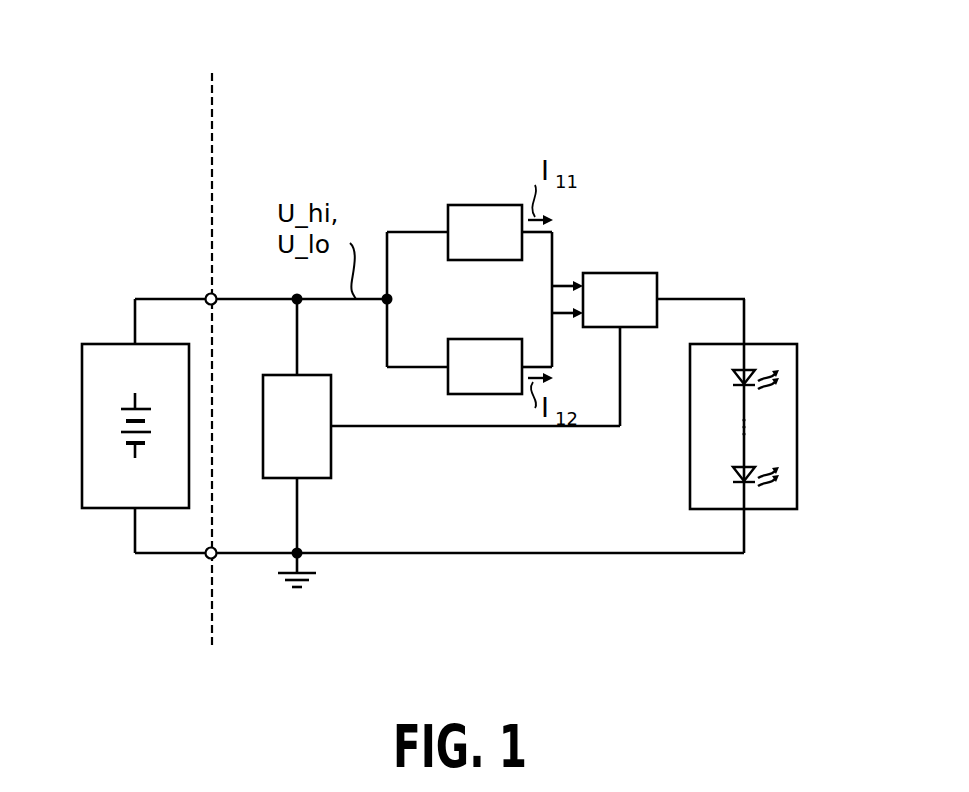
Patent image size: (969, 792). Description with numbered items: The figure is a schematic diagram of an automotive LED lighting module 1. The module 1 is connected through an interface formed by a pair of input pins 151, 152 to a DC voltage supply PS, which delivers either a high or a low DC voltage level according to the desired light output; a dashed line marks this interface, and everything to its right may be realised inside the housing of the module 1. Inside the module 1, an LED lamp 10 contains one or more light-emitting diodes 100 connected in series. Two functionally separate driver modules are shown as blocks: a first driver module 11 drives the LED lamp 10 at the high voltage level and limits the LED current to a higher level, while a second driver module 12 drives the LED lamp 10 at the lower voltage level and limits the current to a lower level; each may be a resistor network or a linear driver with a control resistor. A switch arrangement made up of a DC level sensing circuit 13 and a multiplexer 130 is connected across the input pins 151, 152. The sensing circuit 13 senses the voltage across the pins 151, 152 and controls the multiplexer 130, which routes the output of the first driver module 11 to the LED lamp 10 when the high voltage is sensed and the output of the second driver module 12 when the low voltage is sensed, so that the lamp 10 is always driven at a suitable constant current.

The automotive LED lighting module 1 is at (657, 142).
The LED lamp 10 is at (789, 334).
The light-emitting diode 100 is at (760, 387).
The first driver module 11 is at (485, 205).
The second driver module 12 is at (485, 339).
The DC level sensing circuit 13 is at (318, 375).
The multiplexer 130 is at (620, 273).
The input pin 151 is at (210, 294).
The input pin 152 is at (209, 558).
The DC voltage supply PS is at (95, 344).